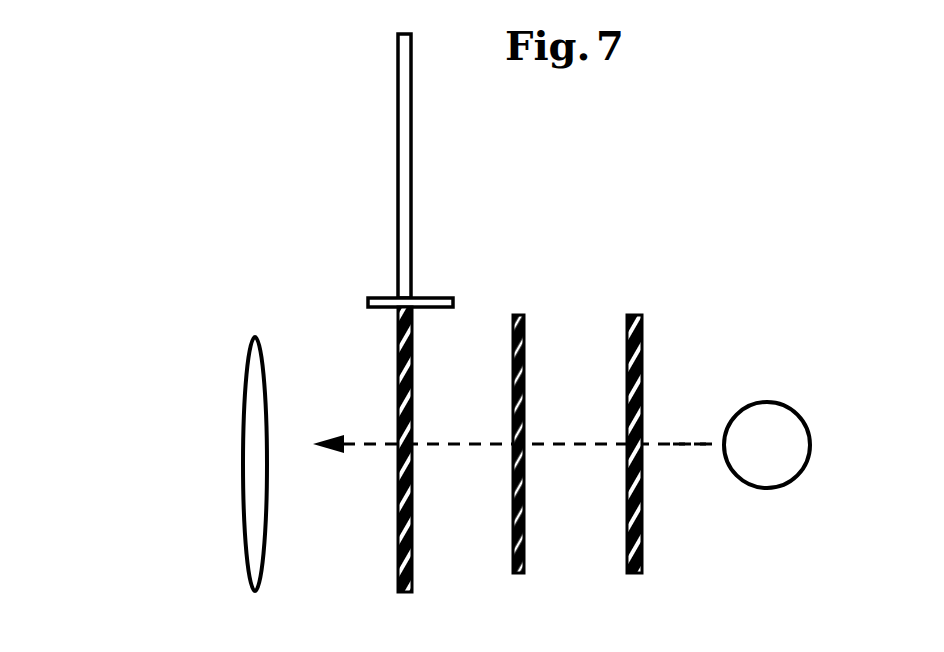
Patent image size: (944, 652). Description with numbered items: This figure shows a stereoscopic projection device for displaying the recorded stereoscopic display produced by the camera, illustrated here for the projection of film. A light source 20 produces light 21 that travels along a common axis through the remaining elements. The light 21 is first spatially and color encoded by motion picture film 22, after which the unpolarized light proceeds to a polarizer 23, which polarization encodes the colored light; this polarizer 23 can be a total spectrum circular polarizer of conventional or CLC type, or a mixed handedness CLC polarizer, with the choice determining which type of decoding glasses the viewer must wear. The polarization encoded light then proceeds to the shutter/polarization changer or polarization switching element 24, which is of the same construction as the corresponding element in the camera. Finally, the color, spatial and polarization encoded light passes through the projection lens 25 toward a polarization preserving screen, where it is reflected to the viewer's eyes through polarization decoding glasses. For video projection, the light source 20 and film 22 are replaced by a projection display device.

The light source 20 is at (747, 483).
The light 21 is at (673, 445).
The motion picture film 22 is at (633, 317).
The polarizer 23 is at (516, 317).
The polarization switching element 24 is at (385, 297).
The projection lens 25 is at (245, 392).